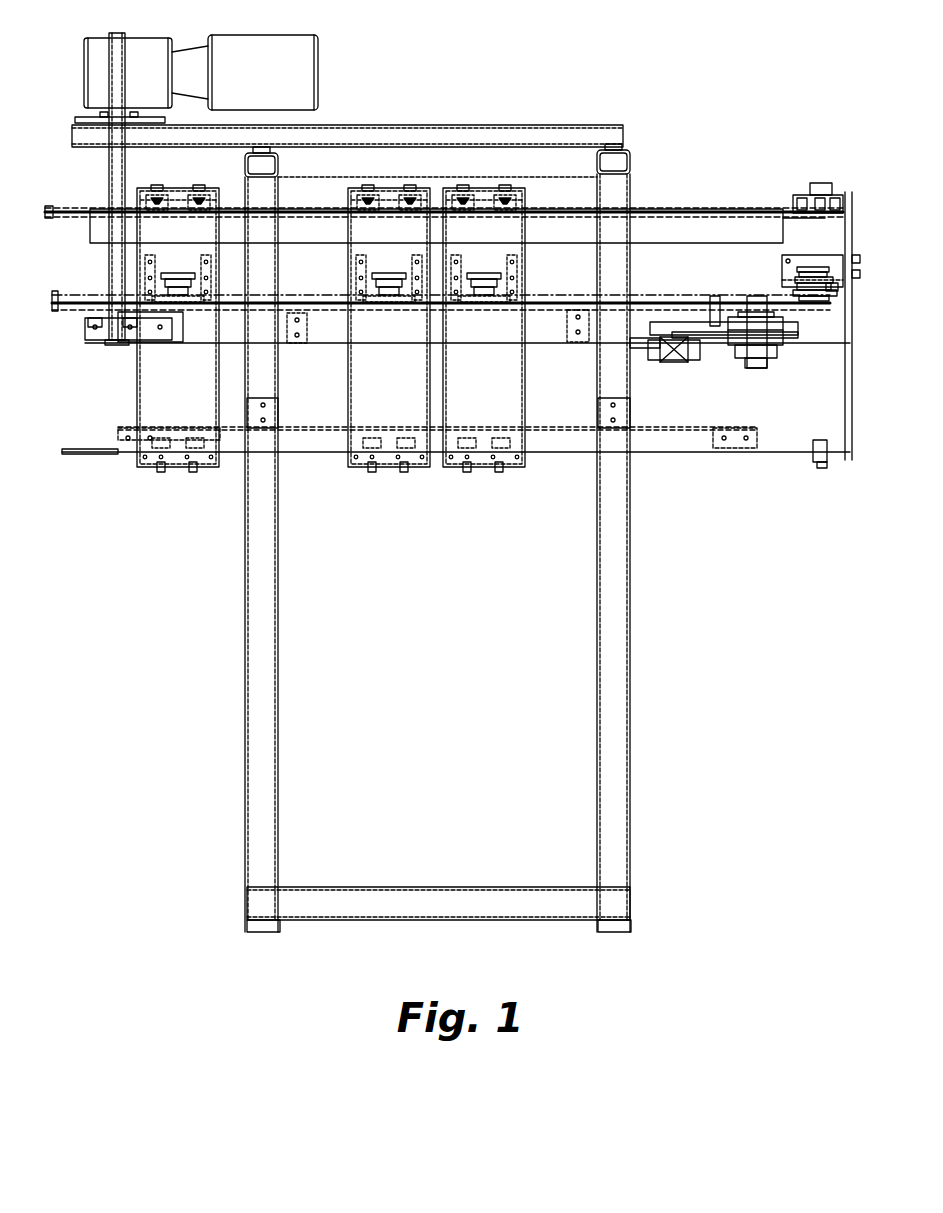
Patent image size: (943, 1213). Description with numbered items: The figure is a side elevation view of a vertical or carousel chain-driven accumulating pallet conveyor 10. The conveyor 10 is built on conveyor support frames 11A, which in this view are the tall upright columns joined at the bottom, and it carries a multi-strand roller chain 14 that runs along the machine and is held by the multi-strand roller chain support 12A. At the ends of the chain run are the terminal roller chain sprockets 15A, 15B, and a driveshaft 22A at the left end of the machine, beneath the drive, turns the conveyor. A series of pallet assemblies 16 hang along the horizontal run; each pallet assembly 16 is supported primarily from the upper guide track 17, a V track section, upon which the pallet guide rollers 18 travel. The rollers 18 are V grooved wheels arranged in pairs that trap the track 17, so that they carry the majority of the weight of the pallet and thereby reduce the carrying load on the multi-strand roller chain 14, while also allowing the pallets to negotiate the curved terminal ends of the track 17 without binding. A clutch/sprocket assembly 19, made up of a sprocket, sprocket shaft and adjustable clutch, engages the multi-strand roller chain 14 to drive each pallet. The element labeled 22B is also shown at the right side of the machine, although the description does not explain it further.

The conveyor 10 is at (484, 150).
The conveyor support frames 11A is at (280, 602).
The multi-strand roller chain support 12A is at (556, 338).
The multi-strand roller chain 14 is at (650, 288).
The terminal roller chain sprocket 15A is at (67, 325).
The terminal roller chain sprocket 15B is at (715, 310).
The pallet assembly 16 is at (150, 392).
The upper guide track 17 is at (695, 207).
The pallet guide rollers 18 is at (371, 230).
The clutch/sprocket assembly 19 is at (487, 258).
The driveshaft 22A is at (108, 170).
The actuator 22B is at (774, 346).